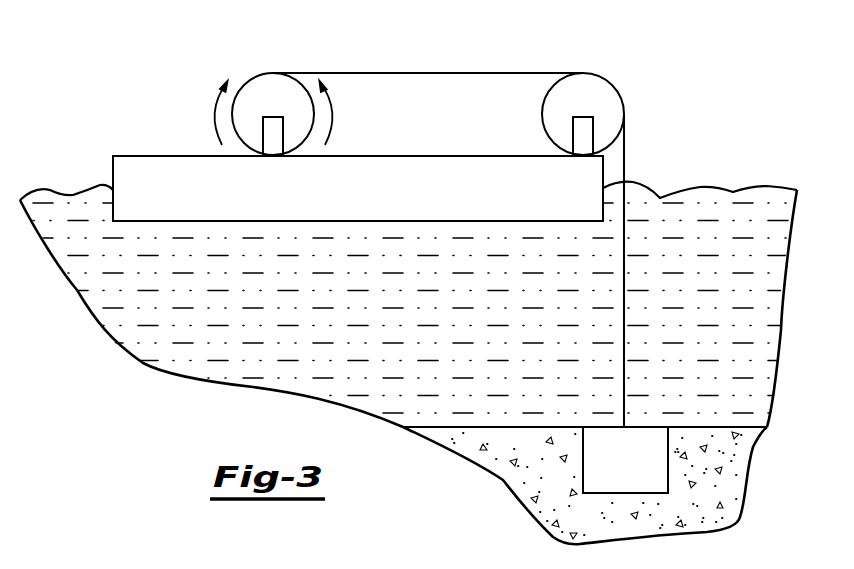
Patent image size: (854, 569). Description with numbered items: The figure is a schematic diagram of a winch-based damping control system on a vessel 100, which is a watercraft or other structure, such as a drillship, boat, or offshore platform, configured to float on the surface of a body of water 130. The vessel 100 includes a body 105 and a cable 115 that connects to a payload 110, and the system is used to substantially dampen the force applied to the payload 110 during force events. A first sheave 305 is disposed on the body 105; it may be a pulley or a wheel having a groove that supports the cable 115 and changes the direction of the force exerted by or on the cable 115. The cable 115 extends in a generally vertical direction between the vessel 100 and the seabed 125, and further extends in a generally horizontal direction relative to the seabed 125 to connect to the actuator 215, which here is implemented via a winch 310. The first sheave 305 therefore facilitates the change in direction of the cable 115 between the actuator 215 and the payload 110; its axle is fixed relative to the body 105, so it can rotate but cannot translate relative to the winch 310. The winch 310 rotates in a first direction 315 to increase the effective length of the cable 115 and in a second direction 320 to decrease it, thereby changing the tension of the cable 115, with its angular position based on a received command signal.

The vessel 100 is at (424, 220).
The body 105 is at (373, 203).
The payload 110 is at (639, 473).
The cable 115 is at (626, 338).
The seabed 125 is at (735, 427).
The body of water 130 is at (773, 185).
The actuator 215 is at (239, 146).
The first sheave 305 is at (542, 112).
The winch 310 is at (243, 84).
The first direction 315 is at (215, 110).
The second direction 320 is at (333, 112).